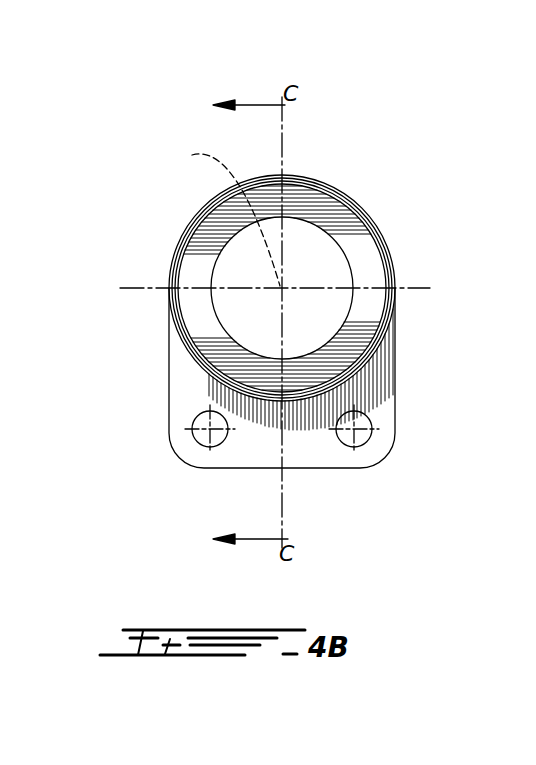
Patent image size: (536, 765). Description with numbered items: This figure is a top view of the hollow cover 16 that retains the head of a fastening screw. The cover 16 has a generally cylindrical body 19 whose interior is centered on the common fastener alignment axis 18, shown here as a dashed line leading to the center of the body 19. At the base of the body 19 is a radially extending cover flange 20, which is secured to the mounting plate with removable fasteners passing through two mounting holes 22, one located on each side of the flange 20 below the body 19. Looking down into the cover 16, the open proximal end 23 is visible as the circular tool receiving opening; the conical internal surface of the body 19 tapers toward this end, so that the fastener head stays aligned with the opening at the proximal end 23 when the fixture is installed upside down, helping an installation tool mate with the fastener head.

The cover 16 is at (153, 318).
The alignment axis 18 is at (221, 213).
The cylindrical body 19 is at (355, 203).
The cover flange 20 is at (170, 395).
The mounting holes 22 is at (203, 434).
The open proximal end 23 is at (222, 252).